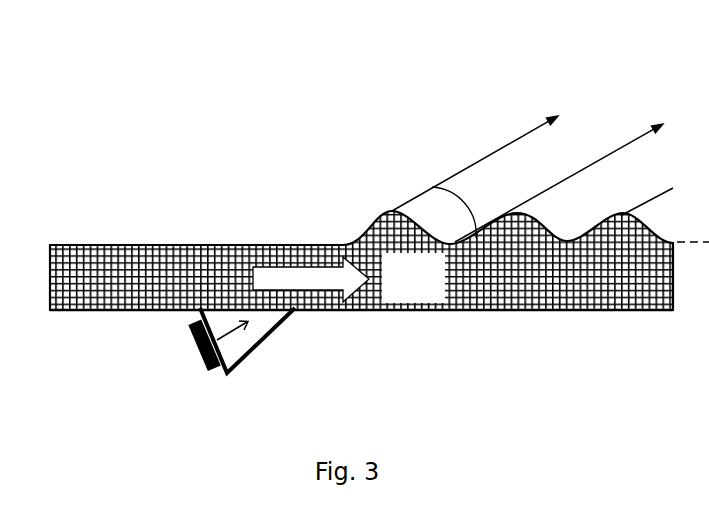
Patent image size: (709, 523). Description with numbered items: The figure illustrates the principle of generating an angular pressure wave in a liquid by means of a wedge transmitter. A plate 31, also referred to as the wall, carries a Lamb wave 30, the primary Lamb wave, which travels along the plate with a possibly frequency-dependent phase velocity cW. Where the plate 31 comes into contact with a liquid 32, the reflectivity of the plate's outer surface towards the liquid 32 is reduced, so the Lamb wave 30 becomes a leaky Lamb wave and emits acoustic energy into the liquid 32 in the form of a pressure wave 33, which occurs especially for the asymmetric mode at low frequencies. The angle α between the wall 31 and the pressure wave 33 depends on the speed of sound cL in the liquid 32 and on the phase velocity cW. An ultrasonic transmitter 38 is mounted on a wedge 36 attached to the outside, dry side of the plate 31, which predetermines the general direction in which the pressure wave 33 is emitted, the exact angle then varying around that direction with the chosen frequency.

The Lamb wave 30 is at (308, 278).
The plate 31 is at (558, 309).
The liquid 32 is at (103, 128).
The pressure wave 33 is at (438, 172).
The wedge 36 is at (243, 343).
The ultrasonic transmitter 38 is at (203, 352).